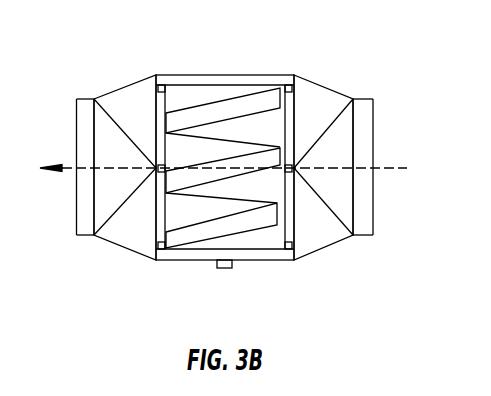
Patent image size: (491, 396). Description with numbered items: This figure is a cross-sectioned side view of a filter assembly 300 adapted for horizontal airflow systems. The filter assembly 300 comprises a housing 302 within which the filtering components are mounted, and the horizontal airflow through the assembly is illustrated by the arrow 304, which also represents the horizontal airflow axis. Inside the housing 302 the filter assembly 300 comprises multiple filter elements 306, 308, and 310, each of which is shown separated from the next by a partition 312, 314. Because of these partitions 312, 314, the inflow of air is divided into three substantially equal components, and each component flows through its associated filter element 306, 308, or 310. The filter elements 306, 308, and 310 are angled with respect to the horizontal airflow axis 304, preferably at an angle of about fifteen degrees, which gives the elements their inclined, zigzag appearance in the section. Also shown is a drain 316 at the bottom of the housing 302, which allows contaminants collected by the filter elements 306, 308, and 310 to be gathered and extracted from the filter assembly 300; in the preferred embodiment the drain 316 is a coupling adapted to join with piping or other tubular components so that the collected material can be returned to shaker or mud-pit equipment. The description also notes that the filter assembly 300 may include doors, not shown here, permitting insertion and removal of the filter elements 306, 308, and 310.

The filter assembly 300 is at (355, 45).
The housing 302 is at (127, 87).
The horizontal airflow arrow 304 is at (387, 167).
The filter element 306 is at (155, 262).
The filter element 308 is at (231, 175).
The filter element 310 is at (262, 100).
The partition 312 is at (220, 196).
The partition 314 is at (212, 138).
The drain 316 is at (225, 271).